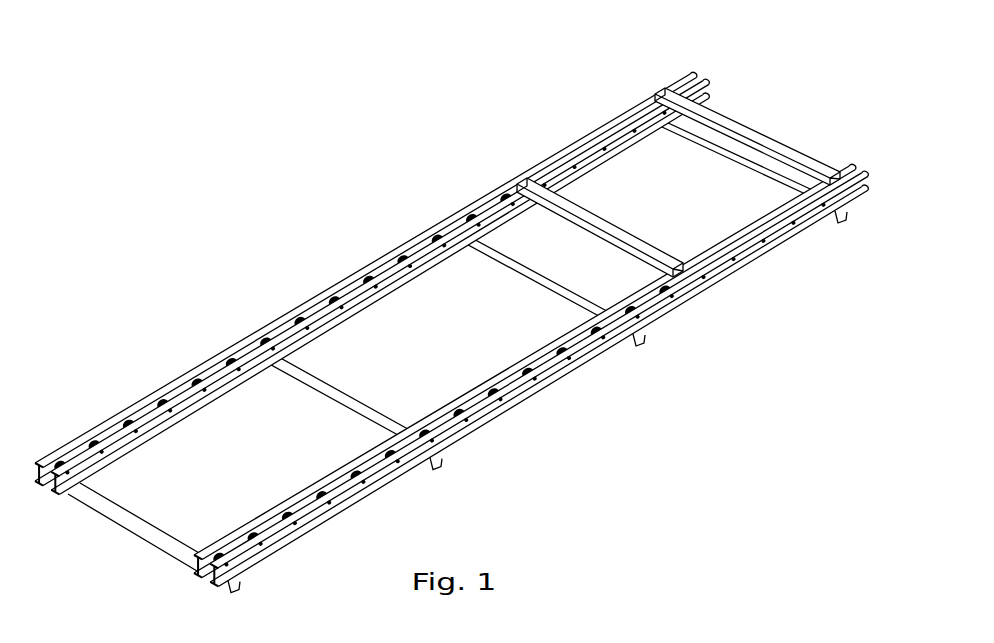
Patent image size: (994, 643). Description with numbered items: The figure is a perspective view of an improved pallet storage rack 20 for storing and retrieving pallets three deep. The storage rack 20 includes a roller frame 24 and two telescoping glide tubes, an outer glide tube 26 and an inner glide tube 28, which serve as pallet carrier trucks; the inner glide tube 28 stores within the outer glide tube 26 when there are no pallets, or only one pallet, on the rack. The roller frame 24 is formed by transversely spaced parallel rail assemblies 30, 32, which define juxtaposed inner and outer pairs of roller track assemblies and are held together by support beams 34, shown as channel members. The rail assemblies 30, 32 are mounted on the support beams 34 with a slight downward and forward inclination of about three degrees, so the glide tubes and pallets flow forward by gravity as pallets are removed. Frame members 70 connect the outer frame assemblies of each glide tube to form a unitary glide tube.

The pallet storage rack 20 is at (357, 193).
The roller frame 24 is at (200, 360).
The outer glide tube 26 is at (692, 67).
The inner glide tube 28 is at (704, 78).
The rail assembly 30 is at (285, 308).
The rail assembly 32 is at (462, 427).
The support beam 34 is at (240, 590).
The frame member 70 is at (613, 237).